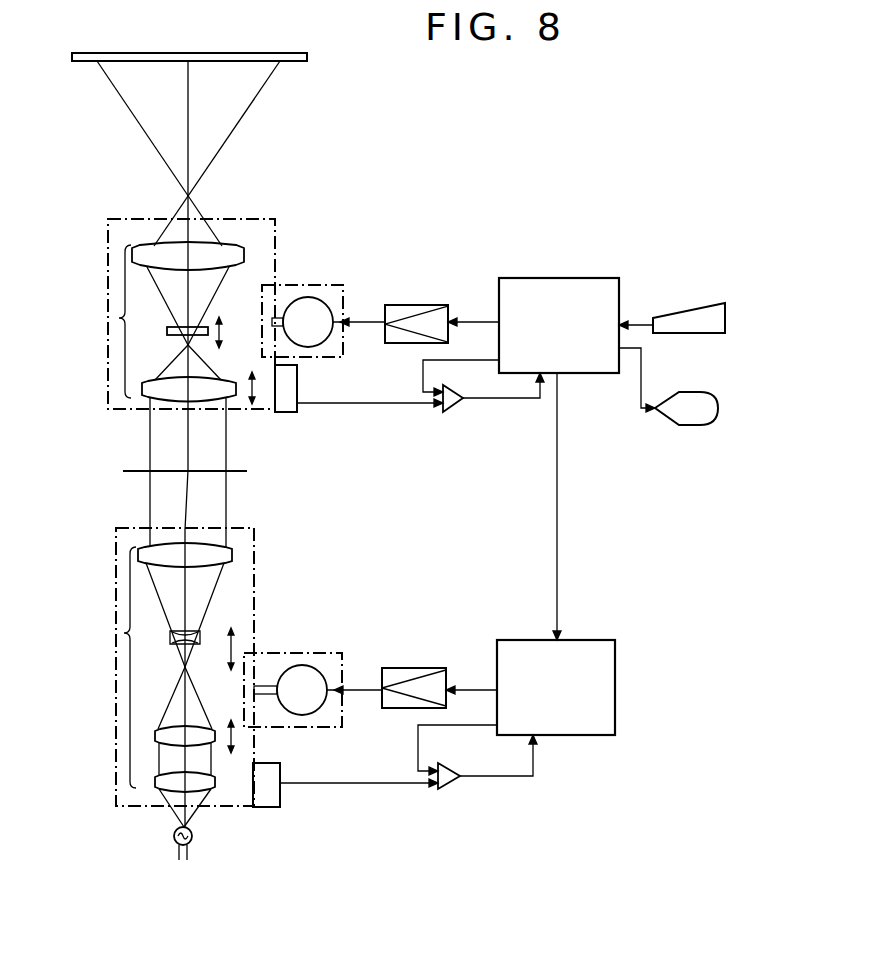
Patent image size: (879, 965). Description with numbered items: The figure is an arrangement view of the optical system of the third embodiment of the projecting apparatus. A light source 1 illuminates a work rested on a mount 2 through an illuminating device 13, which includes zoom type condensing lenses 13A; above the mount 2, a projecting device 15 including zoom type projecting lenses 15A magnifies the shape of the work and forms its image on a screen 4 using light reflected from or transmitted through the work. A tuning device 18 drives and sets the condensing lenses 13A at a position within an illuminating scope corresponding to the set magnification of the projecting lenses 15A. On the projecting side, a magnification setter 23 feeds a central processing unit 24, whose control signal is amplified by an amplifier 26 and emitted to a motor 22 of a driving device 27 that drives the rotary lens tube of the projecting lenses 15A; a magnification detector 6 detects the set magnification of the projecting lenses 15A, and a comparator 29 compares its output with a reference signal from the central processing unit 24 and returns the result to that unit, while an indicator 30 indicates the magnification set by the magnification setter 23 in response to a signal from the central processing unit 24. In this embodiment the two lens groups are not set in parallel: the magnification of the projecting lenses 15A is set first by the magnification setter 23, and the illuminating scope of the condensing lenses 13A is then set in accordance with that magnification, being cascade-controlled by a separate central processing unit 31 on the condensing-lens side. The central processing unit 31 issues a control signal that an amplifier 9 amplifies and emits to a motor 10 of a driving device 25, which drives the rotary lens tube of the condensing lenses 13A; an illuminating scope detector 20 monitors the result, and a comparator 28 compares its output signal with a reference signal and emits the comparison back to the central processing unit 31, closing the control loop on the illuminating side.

The light source 1 is at (193, 840).
The mount 2 is at (247, 471).
The screen 4 is at (251, 52).
The magnification detector 6 is at (288, 412).
The amplifier 9 is at (410, 668).
The motor 10 is at (308, 714).
The illuminating device 13 is at (116, 688).
The zoom type condensing lenses 13A is at (126, 633).
The projecting device 15 is at (108, 287).
The zoom type projecting lenses 15A is at (119, 318).
The tuning device 18 is at (574, 245).
The illuminating scope detector 20 is at (268, 808).
The motor 22 is at (326, 301).
The magnification setter 23 is at (678, 312).
The central processing unit 24 is at (537, 278).
The driving device 25 is at (272, 652).
The amplifier 26 is at (414, 305).
The driving device 27 is at (289, 284).
The comparator 28 is at (450, 790).
The comparator 29 is at (452, 410).
The indicator 30 is at (672, 428).
The central processing unit 31 is at (510, 640).